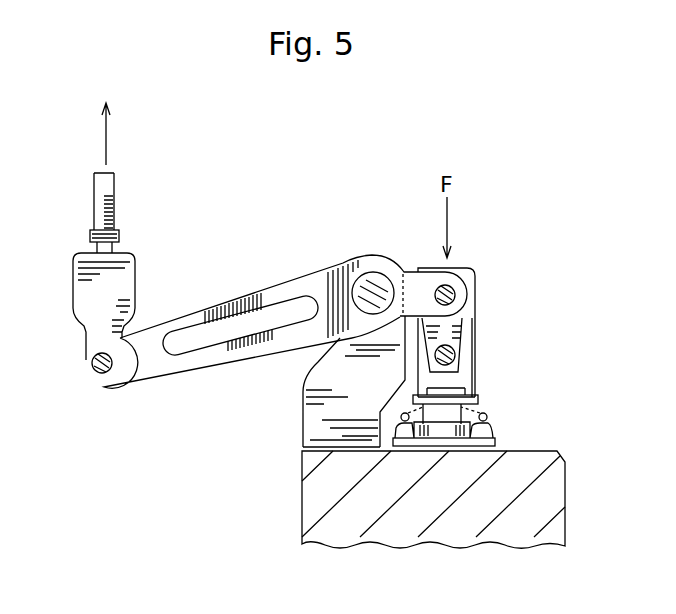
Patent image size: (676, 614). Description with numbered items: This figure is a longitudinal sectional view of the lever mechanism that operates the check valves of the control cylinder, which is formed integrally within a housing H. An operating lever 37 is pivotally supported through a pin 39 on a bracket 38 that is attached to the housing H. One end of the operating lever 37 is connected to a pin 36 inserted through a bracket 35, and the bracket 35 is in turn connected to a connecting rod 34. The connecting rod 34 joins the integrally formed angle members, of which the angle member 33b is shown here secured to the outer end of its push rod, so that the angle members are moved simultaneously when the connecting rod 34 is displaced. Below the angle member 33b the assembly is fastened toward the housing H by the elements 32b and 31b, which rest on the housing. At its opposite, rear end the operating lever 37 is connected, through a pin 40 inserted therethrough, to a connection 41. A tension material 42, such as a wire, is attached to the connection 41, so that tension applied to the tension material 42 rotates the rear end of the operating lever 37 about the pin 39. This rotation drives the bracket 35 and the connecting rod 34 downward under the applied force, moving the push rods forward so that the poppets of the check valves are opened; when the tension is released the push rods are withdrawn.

The base plate 31b is at (497, 441).
The fixing bolts 32b is at (487, 416).
The angle member 33b is at (472, 383).
The connecting rod 34 is at (455, 354).
The bracket 35 is at (475, 268).
The pin 36 is at (468, 298).
The operating lever 37 is at (285, 288).
The bracket 38 is at (312, 412).
The pin 39 is at (373, 278).
The pin 40 is at (95, 386).
The connection 41 is at (85, 290).
The tension material 42 is at (114, 205).
The housing H is at (553, 522).